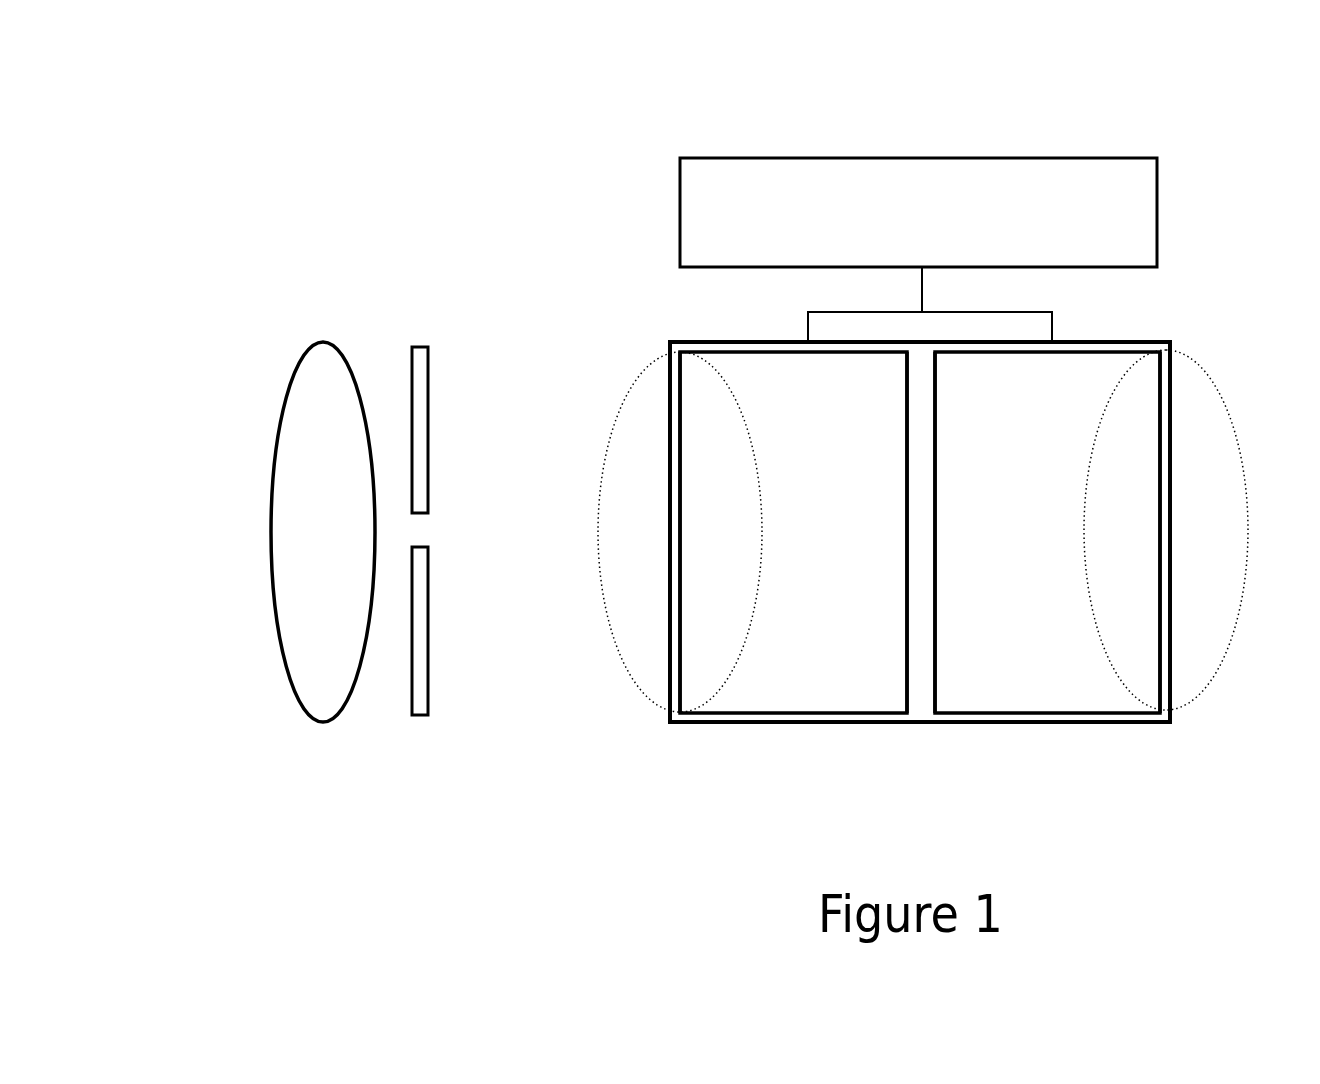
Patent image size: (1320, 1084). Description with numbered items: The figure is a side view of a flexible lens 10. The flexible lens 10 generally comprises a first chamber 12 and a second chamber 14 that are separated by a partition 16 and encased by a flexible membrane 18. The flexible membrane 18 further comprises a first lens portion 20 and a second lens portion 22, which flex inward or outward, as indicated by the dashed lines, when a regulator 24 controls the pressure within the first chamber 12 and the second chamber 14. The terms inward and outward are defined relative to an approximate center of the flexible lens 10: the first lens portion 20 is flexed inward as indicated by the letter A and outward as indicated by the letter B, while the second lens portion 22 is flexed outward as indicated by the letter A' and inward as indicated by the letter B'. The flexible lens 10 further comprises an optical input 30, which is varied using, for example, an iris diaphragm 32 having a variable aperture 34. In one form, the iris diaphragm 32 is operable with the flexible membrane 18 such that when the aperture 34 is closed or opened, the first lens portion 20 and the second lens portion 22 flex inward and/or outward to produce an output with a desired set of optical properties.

The flexible lens 10 is at (570, 216).
The first chamber 12 is at (864, 539).
The second chamber 14 is at (1037, 539).
The partition 16 is at (918, 693).
The flexible membrane 18 is at (767, 715).
The first lens portion 20 is at (675, 678).
The second lens portion 22 is at (1165, 685).
The regulator 24 is at (938, 233).
The optical input 30 is at (312, 697).
The iris diaphragm 32 is at (418, 705).
The variable aperture 34 is at (422, 532).
The inward flexed position of first lens portion A is at (745, 532).
The outward flexed position of first lens portion B is at (608, 532).
The outward flexed position of second lens portion A' is at (1233, 530).
The inward flexed position of second lens portion B' is at (1100, 530).